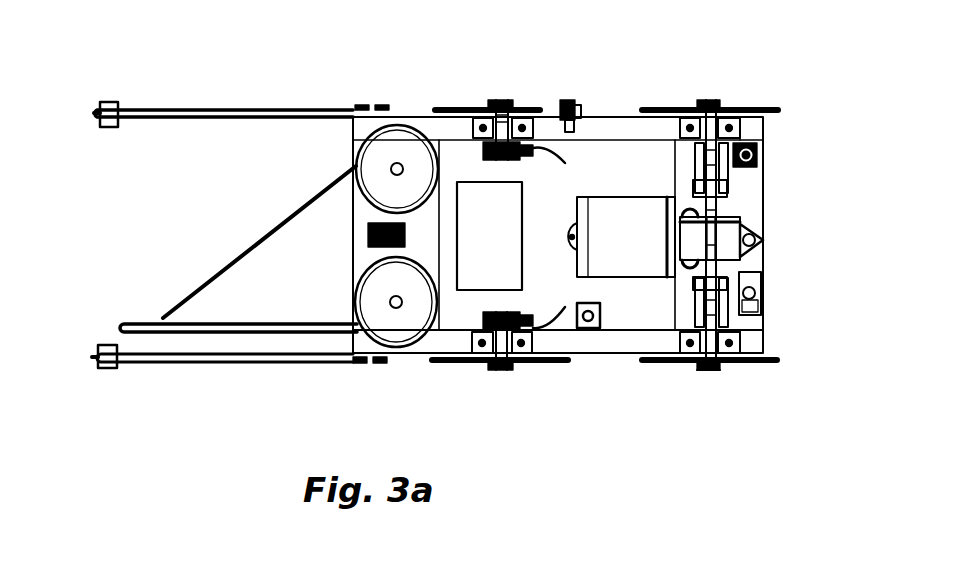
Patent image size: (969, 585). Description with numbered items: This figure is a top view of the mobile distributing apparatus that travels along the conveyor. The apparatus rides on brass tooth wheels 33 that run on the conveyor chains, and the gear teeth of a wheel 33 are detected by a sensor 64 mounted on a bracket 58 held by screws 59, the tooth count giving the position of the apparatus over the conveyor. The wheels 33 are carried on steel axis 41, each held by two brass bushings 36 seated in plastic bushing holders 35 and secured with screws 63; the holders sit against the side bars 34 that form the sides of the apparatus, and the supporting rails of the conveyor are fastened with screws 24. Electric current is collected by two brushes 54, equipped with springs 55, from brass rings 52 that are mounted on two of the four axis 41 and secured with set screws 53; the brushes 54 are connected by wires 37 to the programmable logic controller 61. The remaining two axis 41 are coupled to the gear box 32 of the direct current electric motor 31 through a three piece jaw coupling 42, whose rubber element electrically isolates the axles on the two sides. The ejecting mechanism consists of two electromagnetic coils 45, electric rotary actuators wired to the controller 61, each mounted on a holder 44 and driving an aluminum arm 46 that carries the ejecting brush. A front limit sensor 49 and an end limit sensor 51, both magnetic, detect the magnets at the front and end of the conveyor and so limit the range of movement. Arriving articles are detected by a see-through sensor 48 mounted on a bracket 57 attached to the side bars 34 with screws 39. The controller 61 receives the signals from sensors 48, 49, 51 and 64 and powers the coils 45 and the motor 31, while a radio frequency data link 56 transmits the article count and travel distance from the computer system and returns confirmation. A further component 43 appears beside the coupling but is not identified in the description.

The screws 24 is at (205, 322).
The direct current electric motor 31 is at (628, 240).
The gear box 32 is at (722, 241).
The brass tooth wheels 33 is at (778, 108).
The side bars 34 is at (765, 133).
The plastic bushing holders 35 is at (726, 107).
The brass bushings 36 is at (724, 365).
The wires 37 is at (533, 108).
The screws 39 is at (372, 357).
The steel axis 41 is at (493, 372).
The three piece jaw coupling 42 is at (725, 183).
The bearing 43 is at (745, 216).
The holder 44 is at (320, 138).
The electromagnetic coils 45 is at (348, 115).
The aluminum arm 46 is at (182, 322).
The see-through sensor 48 is at (99, 103).
The front limit sensor 49 is at (587, 330).
The end limit sensor 51 is at (752, 157).
The brass rings 52 is at (466, 147).
The set screws 53 is at (470, 122).
The brushes 54 is at (522, 332).
The springs 55 is at (505, 107).
The radio frequency data link 56 is at (750, 283).
The bracket 57 is at (227, 363).
The bracket 58 is at (569, 104).
The screws 59 is at (583, 113).
The programmable logic controller 61 is at (457, 247).
The screws 63 is at (742, 343).
The sensor 64 is at (554, 100).